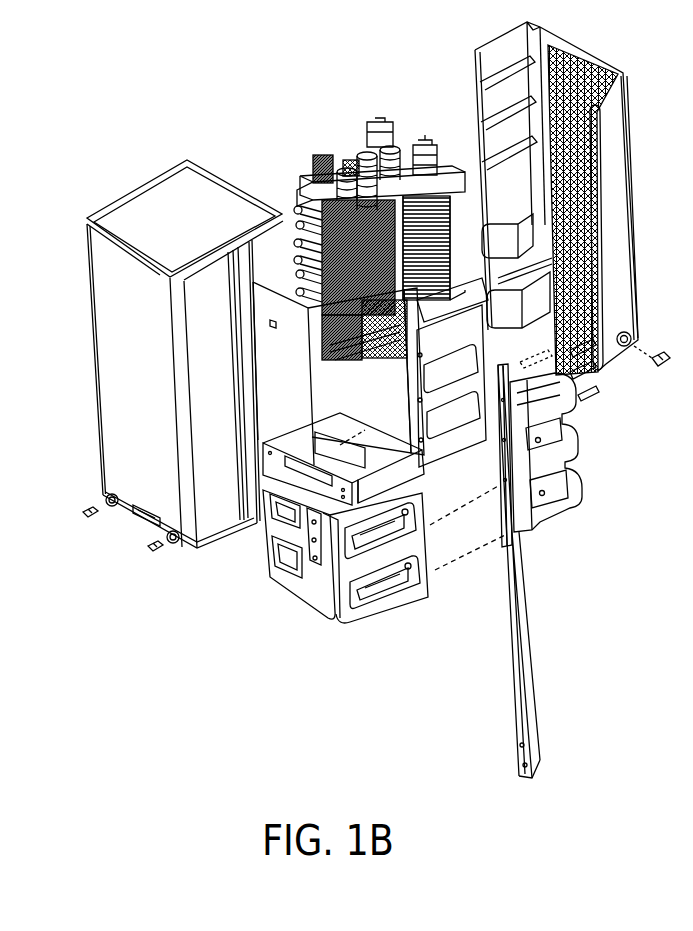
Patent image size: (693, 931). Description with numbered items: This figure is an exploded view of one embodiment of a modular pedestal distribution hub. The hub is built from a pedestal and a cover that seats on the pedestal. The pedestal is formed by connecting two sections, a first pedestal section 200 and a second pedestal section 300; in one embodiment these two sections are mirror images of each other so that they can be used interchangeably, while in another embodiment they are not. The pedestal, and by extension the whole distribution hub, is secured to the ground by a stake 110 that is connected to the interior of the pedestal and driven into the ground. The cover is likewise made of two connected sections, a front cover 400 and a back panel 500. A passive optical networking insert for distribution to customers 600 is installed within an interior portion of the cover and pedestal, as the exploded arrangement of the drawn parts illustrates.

The stake 110 is at (522, 692).
The first pedestal section 200 is at (292, 598).
The second pedestal section 300 is at (558, 498).
The front cover 400 is at (127, 208).
The back panel 500 is at (612, 247).
The passive optical networking insert 600 is at (336, 144).